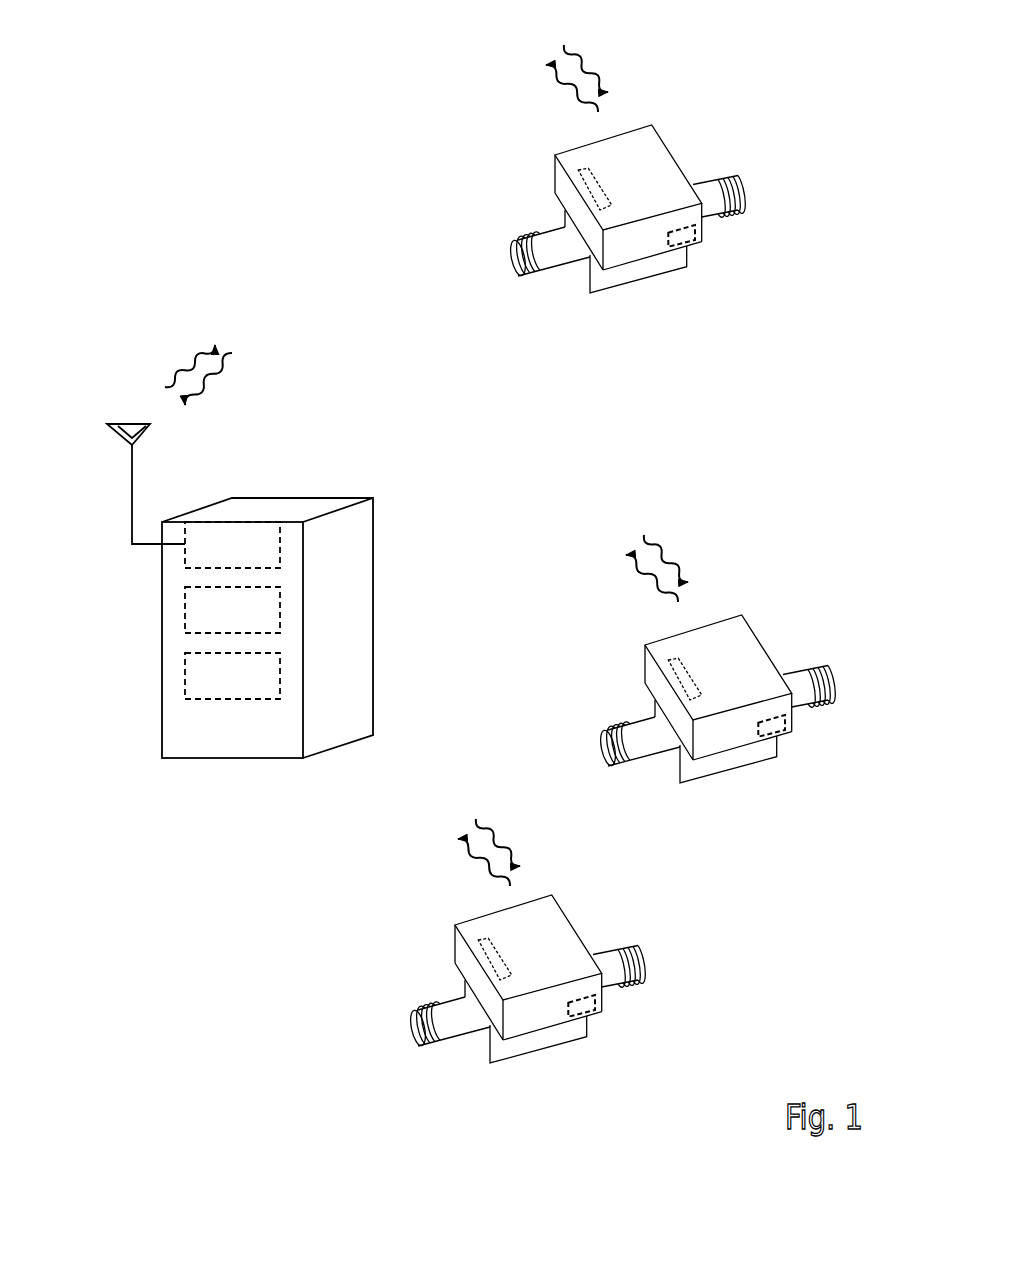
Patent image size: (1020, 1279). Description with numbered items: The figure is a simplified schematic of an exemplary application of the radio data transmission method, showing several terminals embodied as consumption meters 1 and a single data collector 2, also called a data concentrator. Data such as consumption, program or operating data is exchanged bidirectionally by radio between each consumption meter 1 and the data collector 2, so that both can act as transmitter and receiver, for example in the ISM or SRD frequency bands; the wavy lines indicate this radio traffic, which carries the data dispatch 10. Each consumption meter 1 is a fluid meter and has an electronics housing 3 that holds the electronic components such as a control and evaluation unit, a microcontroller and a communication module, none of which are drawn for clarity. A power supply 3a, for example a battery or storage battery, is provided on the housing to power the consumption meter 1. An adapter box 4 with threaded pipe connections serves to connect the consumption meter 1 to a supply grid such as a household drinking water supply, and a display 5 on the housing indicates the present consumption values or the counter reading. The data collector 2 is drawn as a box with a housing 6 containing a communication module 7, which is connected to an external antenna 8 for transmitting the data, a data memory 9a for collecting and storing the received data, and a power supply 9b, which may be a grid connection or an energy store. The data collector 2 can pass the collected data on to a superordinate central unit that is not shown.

The consumption meter 1 is at (603, 208).
The data collector 2 is at (275, 533).
The electronics housing 3 is at (628, 156).
The power supply 3a is at (729, 274).
The adapter box 4 is at (626, 289).
The display 5 is at (520, 194).
The housing 6 is at (375, 673).
The communication module 7 is at (255, 535).
The antenna 8 is at (118, 425).
The data memory 9a is at (203, 606).
The power supply 9b is at (203, 687).
The data dispatch 10 is at (586, 63).